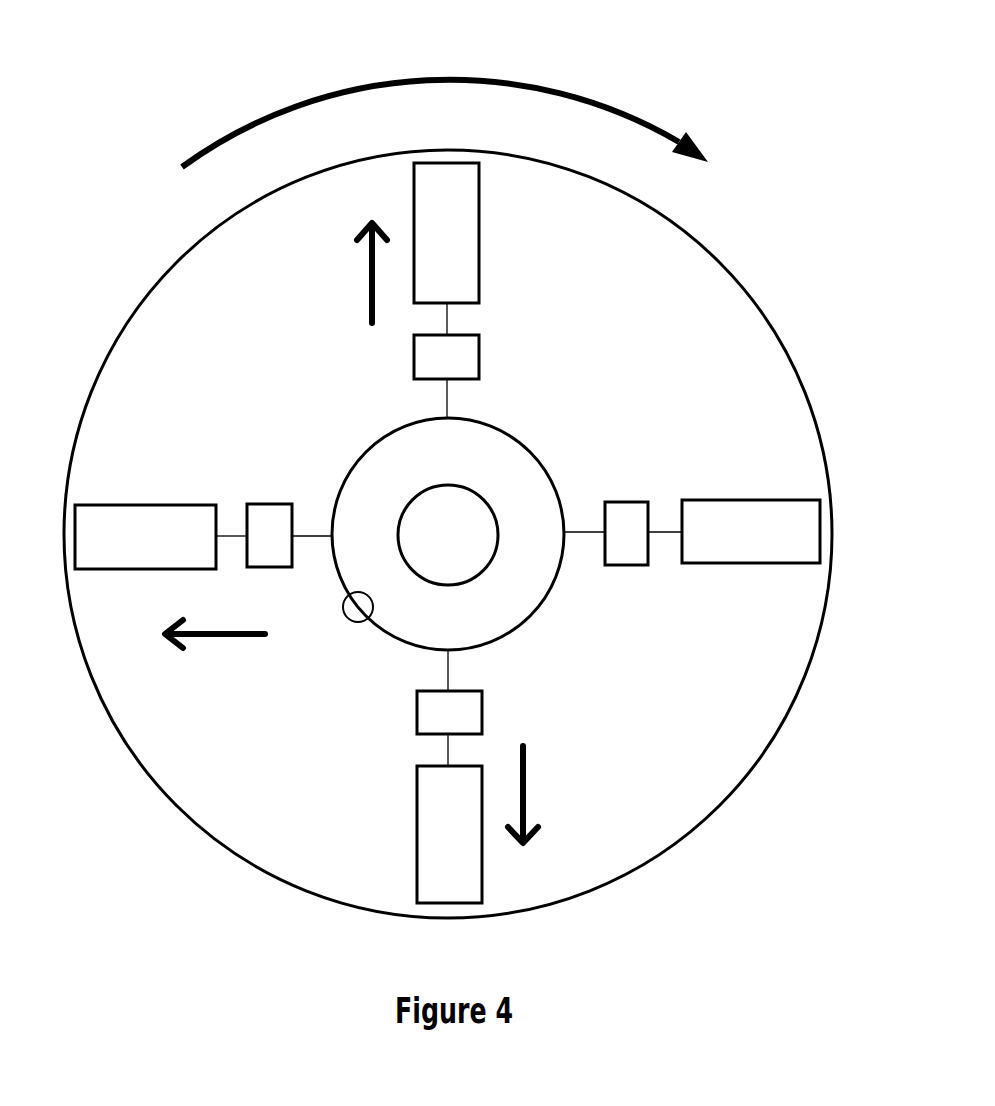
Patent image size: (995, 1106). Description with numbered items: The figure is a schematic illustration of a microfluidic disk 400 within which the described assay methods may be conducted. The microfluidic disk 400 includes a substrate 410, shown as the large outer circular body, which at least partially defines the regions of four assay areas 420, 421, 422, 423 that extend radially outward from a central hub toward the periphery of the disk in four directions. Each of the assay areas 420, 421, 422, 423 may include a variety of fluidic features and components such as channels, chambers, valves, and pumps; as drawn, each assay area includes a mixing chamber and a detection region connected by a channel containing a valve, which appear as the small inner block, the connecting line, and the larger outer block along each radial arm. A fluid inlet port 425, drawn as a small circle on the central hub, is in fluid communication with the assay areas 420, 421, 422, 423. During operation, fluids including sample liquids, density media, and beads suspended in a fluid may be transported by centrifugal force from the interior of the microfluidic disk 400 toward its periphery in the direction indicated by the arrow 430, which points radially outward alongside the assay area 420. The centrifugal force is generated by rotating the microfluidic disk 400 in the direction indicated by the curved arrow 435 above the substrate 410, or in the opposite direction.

The microfluidic disk 400 is at (819, 22).
The substrate 410 is at (756, 297).
The assay area 420 is at (407, 653).
The assay area 421 is at (330, 490).
The assay area 422 is at (490, 158).
The assay area 423 is at (825, 490).
The fluid inlet port 425 is at (347, 617).
The arrow 430 is at (528, 788).
The arrow 435 is at (585, 98).